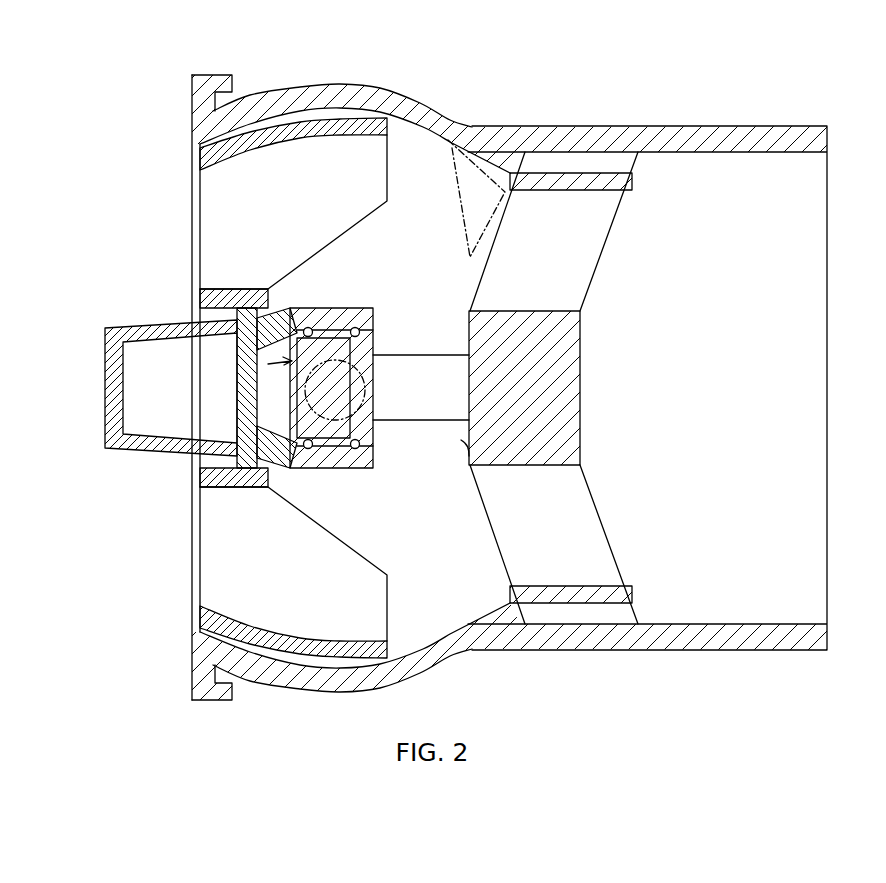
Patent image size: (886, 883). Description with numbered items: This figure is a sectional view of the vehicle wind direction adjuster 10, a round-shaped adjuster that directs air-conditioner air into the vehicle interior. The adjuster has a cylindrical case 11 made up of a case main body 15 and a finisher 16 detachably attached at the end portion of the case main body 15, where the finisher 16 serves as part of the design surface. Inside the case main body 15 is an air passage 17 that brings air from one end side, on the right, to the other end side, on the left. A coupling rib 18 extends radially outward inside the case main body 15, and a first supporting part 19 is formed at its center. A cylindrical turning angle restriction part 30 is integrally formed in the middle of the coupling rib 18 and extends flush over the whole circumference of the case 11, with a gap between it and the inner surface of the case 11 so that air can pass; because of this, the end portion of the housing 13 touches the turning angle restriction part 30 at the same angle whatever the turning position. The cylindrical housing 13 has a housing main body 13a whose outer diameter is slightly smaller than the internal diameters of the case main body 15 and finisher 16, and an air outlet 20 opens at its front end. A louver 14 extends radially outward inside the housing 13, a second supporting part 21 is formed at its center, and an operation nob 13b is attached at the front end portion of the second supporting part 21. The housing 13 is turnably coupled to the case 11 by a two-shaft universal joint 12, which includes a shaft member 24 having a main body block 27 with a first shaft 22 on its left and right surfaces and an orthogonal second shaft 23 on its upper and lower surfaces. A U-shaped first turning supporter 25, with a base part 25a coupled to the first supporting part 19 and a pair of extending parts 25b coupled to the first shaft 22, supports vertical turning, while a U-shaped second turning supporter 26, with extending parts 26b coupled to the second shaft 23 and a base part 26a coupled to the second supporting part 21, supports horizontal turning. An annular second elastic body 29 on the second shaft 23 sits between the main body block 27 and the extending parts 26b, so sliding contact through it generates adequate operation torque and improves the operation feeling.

The vehicle wind direction adjuster 10 is at (790, 107).
The case 11 is at (690, 127).
The two-shaft universal joint 12 is at (288, 403).
The housing 13 is at (352, 110).
The housing main body 13a is at (283, 127).
The operation nob 13b is at (107, 390).
The louver 14 is at (208, 203).
The case main body 15 is at (608, 135).
The finisher 16 is at (200, 107).
The air passage 17 is at (742, 405).
The coupling rib 18 is at (592, 250).
The first supporting part 19 is at (573, 390).
The air outlet 20 is at (200, 240).
The second supporting part 21 is at (205, 300).
The first shaft 22 is at (368, 418).
The second shaft 23 is at (340, 308).
The shaft member 24 is at (237, 360).
The first turning supporter 25 is at (429, 403).
The base part 25a is at (463, 446).
The extending part 25b is at (420, 421).
The second turning supporter 26 is at (283, 390).
The base part 26a is at (238, 405).
The extending part 26b is at (286, 308).
The main body block 27 is at (278, 484).
The second elastic body 29 is at (358, 327).
The turning angle restriction part 30 is at (557, 180).